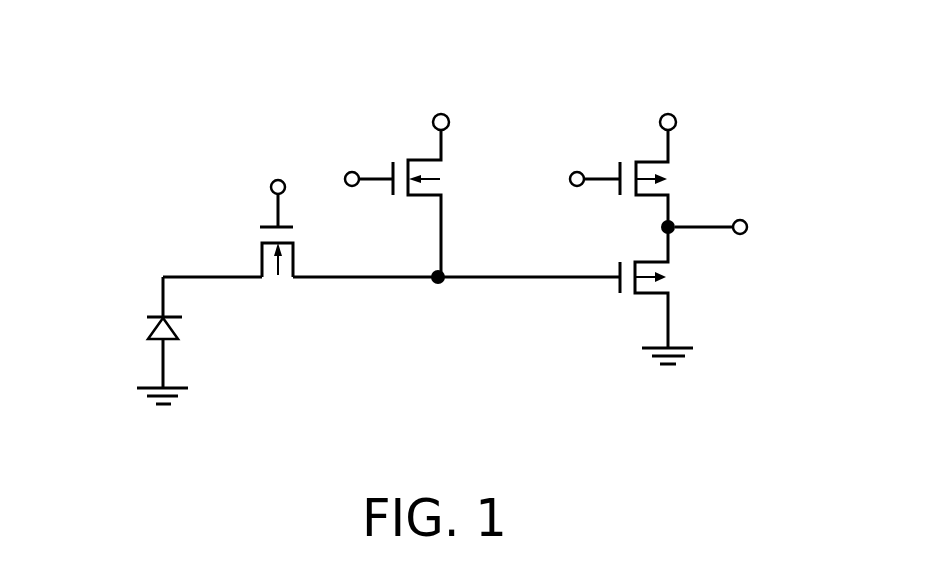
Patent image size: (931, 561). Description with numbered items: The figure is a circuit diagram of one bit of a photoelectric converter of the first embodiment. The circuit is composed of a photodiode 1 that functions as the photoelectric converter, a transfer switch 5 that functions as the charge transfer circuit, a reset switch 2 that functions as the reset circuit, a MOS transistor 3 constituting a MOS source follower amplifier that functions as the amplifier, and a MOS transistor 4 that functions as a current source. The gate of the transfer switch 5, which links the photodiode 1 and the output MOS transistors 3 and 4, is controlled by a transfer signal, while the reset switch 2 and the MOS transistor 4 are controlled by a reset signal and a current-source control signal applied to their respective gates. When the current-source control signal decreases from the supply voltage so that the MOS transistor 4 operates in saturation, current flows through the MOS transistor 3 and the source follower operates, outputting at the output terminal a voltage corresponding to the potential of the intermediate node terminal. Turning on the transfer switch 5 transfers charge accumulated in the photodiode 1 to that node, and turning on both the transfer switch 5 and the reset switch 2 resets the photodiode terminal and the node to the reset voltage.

The photodiode 1 is at (144, 359).
The reset switch 2 is at (456, 170).
The MOS transistor 3 is at (564, 347).
The MOS transistor 4 is at (647, 157).
The transfer switch 5 is at (301, 287).